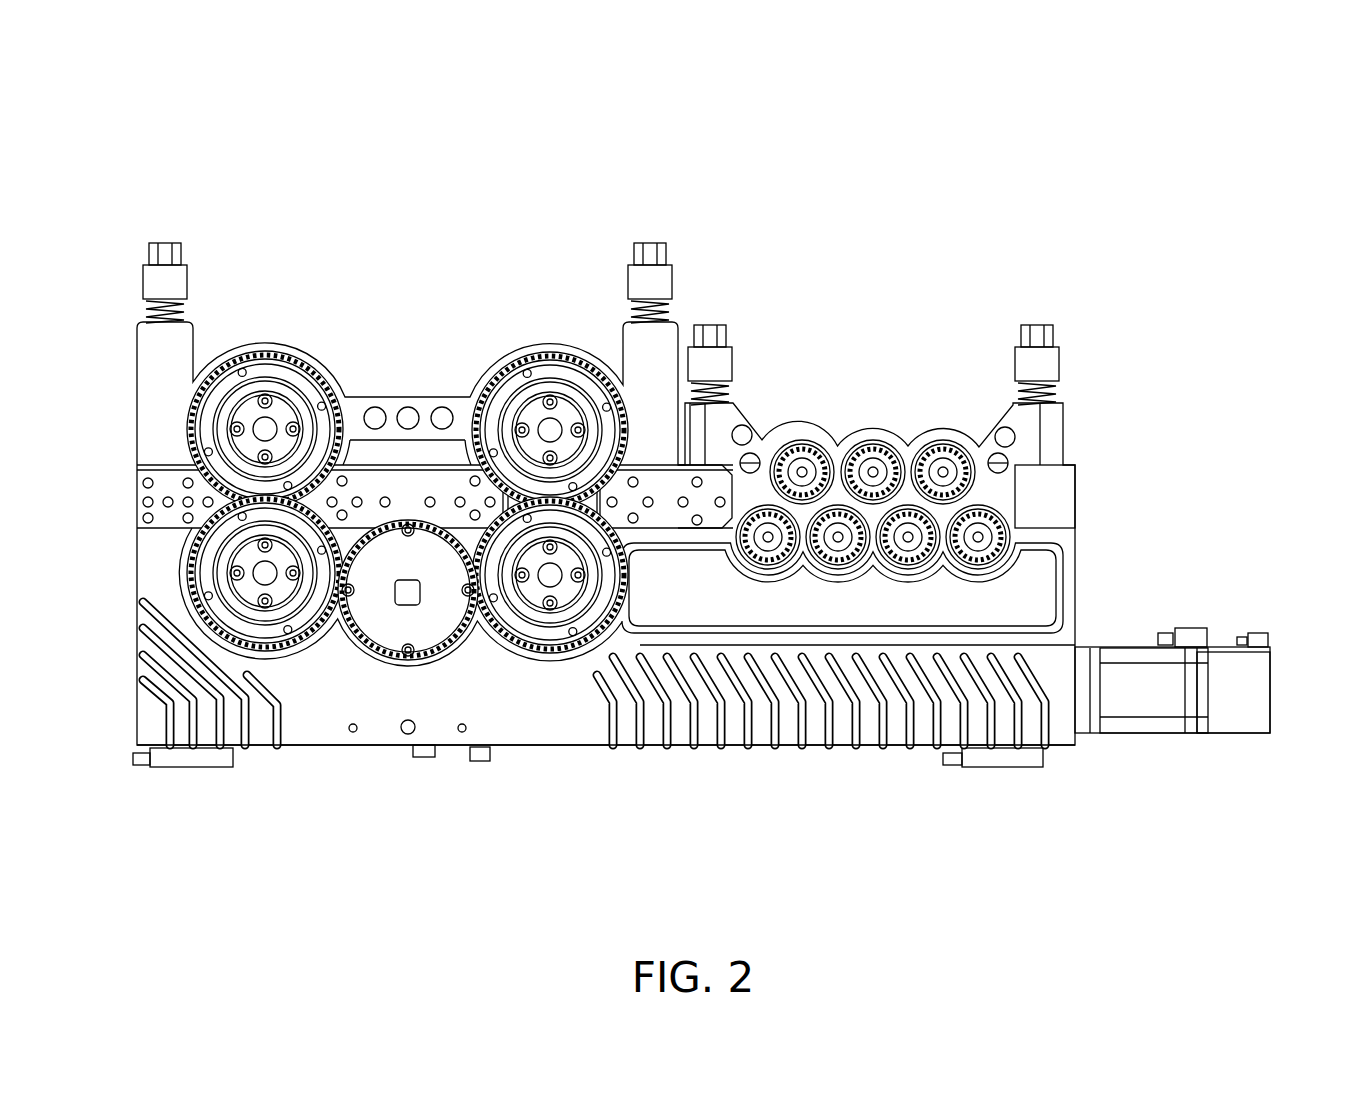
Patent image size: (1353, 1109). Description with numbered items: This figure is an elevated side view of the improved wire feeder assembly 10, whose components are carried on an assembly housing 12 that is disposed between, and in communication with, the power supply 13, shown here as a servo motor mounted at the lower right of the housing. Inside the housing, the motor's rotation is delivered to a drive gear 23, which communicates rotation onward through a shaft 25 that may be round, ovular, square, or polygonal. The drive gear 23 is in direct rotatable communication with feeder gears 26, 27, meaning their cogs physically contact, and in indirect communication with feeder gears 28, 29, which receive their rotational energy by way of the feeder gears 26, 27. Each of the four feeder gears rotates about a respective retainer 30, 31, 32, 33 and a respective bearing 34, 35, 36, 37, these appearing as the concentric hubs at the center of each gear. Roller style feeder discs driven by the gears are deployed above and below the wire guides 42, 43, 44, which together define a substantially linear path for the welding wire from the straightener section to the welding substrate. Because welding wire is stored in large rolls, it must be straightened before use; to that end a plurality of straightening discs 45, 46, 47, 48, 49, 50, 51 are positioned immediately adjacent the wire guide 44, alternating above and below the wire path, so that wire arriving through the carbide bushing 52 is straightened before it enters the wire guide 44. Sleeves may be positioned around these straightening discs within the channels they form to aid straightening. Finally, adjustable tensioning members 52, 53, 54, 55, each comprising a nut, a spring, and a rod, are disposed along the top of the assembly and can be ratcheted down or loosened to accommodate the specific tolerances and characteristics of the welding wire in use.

The wire feeder assembly 10 is at (254, 135).
The assembly housing 12 is at (574, 724).
The power supply 13 is at (1137, 643).
The drive gear 23 is at (372, 640).
The shaft 25 is at (404, 588).
The feeder gear 26 is at (260, 640).
The feeder gear 27 is at (548, 638).
The feeder gear 28 is at (283, 365).
The feeder gear 29 is at (548, 352).
The retainer 30 is at (630, 618).
The retainer 31 is at (225, 592).
The retainer 32 is at (237, 408).
The retainer 33 is at (570, 418).
The bearing 34 is at (605, 582).
The bearing 35 is at (227, 553).
The bearing 36 is at (256, 380).
The bearing 37 is at (523, 392).
The wire guide 42 is at (168, 482).
The wire guide 43 is at (388, 485).
The wire guide 44 is at (682, 518).
The straightening disc 45 is at (770, 565).
The straightening disc 46 is at (788, 450).
The straightening disc 47 is at (828, 567).
The straightening disc 48 is at (867, 447).
The straightening disc 49 is at (897, 567).
The straightening disc 50 is at (945, 445).
The straightening disc 51 is at (965, 568).
The carbide bushing 52 is at (1038, 330).
The adjustable tensioning member 53 is at (712, 330).
The adjustable tensioning member 54 is at (650, 243).
The adjustable tensioning member 55 is at (167, 243).